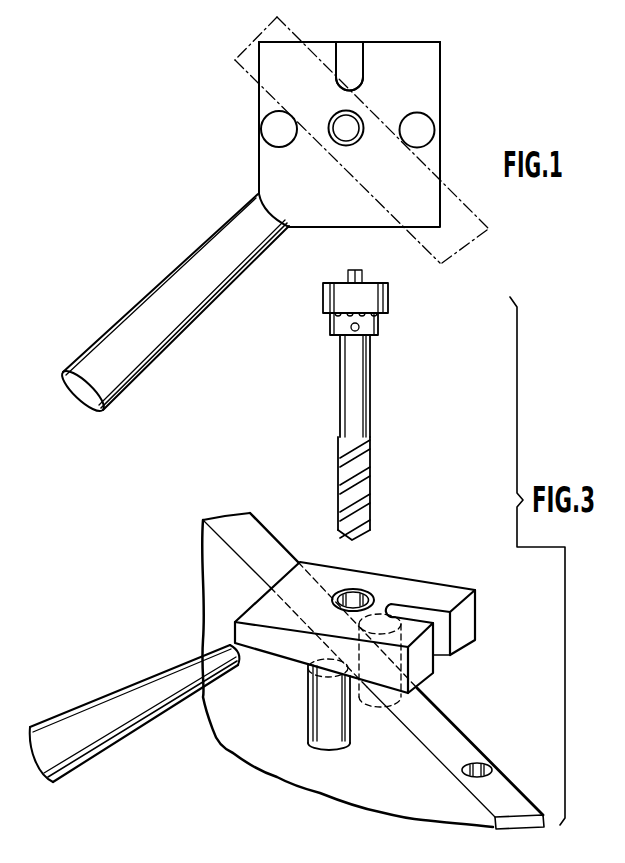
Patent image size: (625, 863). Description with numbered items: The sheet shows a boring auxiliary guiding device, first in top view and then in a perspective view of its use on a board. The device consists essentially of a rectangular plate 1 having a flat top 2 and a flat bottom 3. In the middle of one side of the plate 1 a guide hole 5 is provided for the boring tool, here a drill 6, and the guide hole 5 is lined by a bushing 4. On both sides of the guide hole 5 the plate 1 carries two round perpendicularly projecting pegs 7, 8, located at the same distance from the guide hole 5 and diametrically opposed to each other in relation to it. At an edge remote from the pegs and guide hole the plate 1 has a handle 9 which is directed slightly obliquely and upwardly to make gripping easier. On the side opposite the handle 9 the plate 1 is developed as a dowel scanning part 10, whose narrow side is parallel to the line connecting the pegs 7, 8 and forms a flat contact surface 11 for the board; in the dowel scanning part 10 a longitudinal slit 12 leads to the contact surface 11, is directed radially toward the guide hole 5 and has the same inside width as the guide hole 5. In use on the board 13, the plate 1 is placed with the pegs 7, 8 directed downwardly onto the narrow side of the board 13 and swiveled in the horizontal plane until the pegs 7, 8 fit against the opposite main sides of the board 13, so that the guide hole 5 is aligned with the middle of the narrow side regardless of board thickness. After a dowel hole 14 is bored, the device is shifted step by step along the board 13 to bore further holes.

In FIG. 1, the plate 1 is at (278, 208).
In FIG. 3, the plate 1 is at (277, 654).
In FIG. 1, the flat top 2 is at (417, 70).
In FIG. 1, the flat bottom 3 is at (428, 1).
In FIG. 3, the flat bottom 3 is at (412, 588).
In FIG. 1, the bushing 4 is at (333, 140).
In FIG. 1, the guide hole 5 is at (345, 135).
In FIG. 3, the guide hole 5 is at (355, 600).
In FIG. 3, the drill 6 is at (363, 418).
In FIG. 1, the perpendicular peg 7 is at (272, 131).
In FIG. 3, the perpendicular peg 7 is at (322, 718).
In FIG. 1, the perpendicular peg 8 is at (422, 133).
In FIG. 1, the handle 9 is at (130, 325).
In FIG. 3, the handle 9 is at (135, 713).
In FIG. 1, the dowel scanning part 10 is at (282, 57).
In FIG. 1, the contact surface 11 is at (393, 42).
In FIG. 1, the longitudinal slit 12 is at (360, 49).
In FIG. 1, the board 13 is at (462, 248).
In FIG. 3, the board 13 is at (373, 671).
In FIG. 3, the dowel hole 14 is at (478, 765).